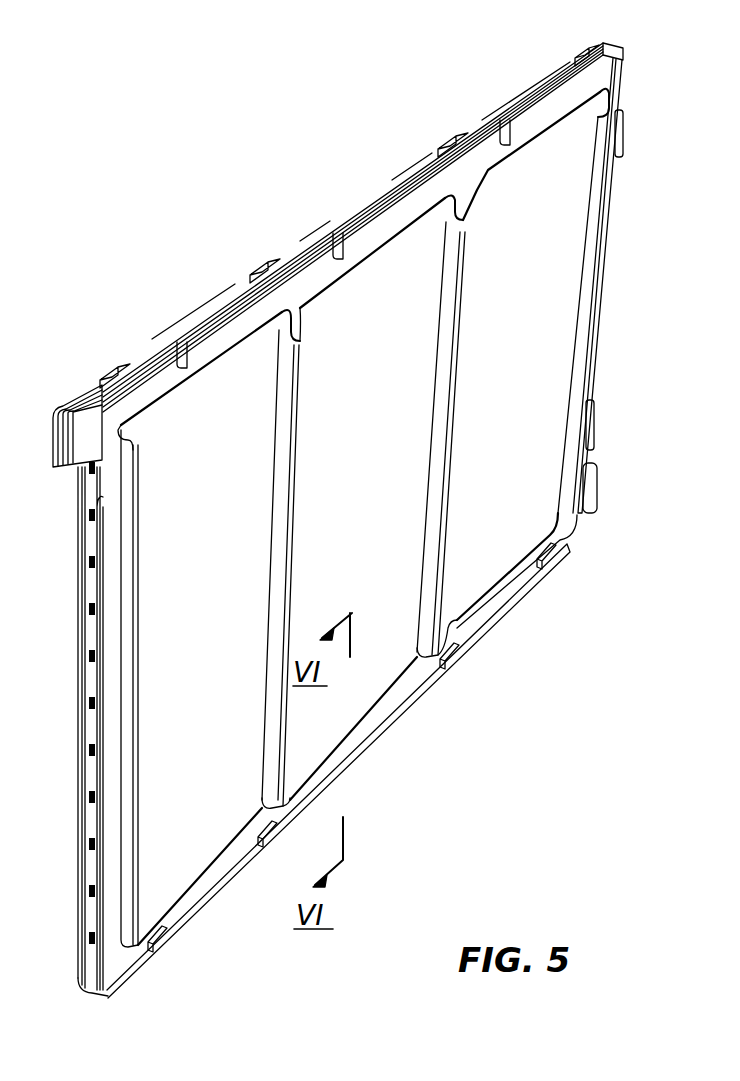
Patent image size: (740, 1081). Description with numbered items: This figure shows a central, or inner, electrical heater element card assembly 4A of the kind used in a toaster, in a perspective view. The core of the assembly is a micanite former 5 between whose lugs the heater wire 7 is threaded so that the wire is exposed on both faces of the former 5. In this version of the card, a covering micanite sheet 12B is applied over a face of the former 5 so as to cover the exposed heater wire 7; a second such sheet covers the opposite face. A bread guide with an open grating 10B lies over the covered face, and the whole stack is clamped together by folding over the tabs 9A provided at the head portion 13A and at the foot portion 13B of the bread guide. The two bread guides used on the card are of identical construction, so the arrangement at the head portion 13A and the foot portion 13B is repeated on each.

The electrical heater element card assembly 4A is at (520, 708).
The micanite former 5 is at (66, 408).
The heater wire 7 is at (92, 598).
The tabs 9A is at (118, 368).
The open grating 10B is at (443, 372).
The covering micanite sheet 12B is at (381, 522).
The head portion 13A is at (298, 277).
The foot portion 13B is at (392, 718).